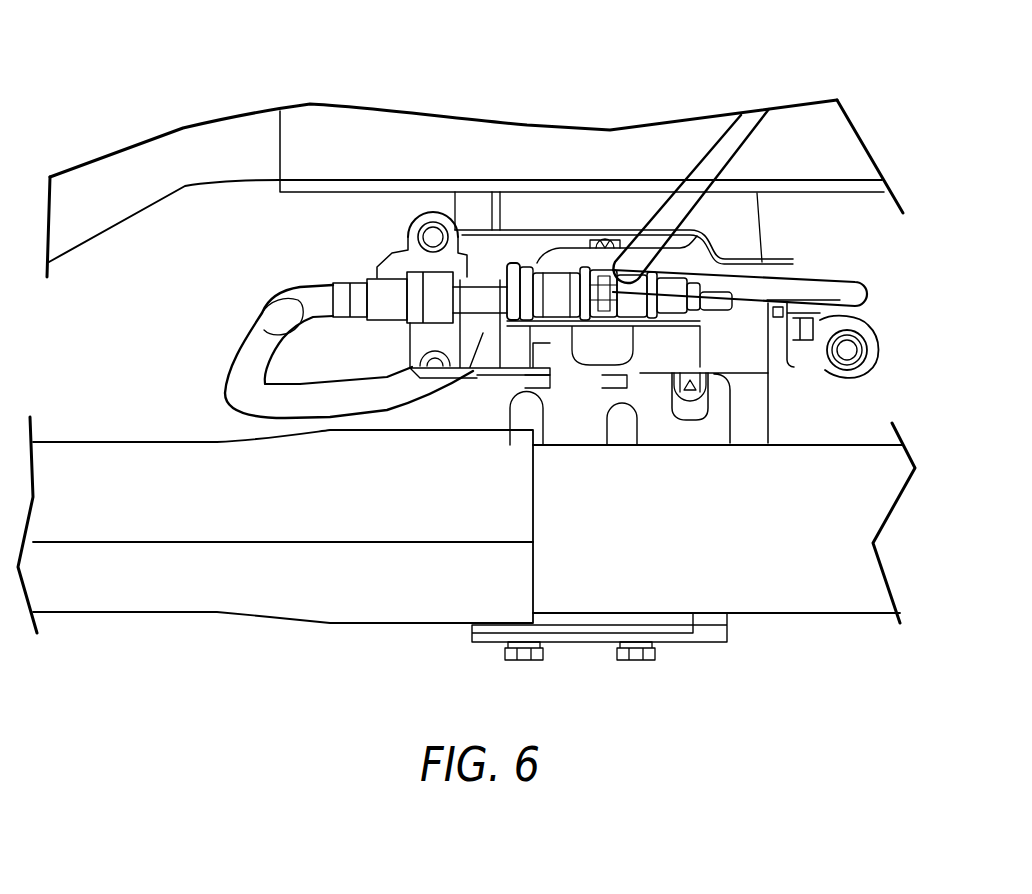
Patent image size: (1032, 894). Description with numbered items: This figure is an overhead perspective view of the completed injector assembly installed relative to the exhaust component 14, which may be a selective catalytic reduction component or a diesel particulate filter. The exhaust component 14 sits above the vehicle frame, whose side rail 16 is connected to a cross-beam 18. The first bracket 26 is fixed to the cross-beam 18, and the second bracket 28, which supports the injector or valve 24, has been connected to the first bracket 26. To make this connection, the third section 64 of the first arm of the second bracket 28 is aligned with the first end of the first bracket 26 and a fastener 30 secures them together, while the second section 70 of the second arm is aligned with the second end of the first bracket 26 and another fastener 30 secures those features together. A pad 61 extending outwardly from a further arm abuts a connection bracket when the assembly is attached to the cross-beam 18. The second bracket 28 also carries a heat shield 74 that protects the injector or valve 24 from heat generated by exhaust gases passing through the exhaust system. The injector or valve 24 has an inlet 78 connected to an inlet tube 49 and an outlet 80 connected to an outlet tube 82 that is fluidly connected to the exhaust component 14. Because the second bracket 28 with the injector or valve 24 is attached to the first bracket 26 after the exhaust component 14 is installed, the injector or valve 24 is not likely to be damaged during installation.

The exhaust component 14 is at (800, 130).
The side rail 16 is at (727, 534).
The cross-beam 18 is at (737, 227).
The injector or valve 24 is at (572, 278).
The first bracket 26 is at (827, 270).
The second bracket 28 is at (776, 378).
The fastener 30 is at (436, 237).
The inlet tube 49 is at (240, 350).
The pad 61 is at (697, 405).
The third section 64 is at (857, 328).
The second section 70 is at (427, 342).
The heat shield 74 is at (613, 230).
The inlet 78 is at (470, 283).
The outlet 80 is at (740, 298).
The outlet tube 82 is at (708, 175).